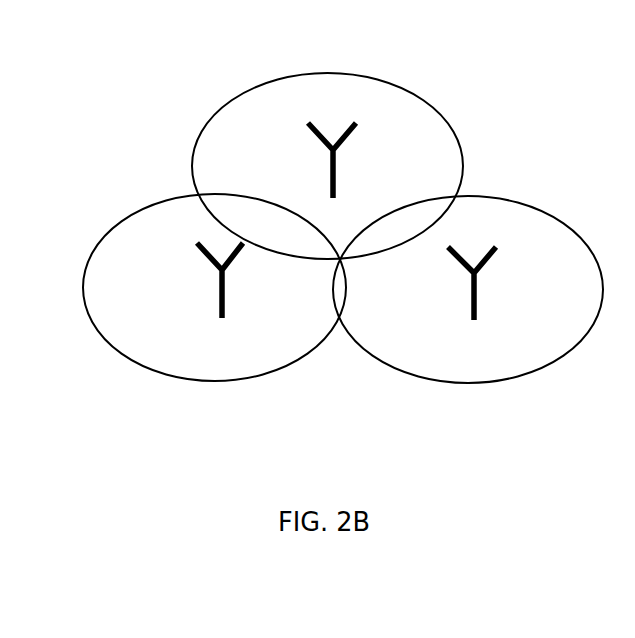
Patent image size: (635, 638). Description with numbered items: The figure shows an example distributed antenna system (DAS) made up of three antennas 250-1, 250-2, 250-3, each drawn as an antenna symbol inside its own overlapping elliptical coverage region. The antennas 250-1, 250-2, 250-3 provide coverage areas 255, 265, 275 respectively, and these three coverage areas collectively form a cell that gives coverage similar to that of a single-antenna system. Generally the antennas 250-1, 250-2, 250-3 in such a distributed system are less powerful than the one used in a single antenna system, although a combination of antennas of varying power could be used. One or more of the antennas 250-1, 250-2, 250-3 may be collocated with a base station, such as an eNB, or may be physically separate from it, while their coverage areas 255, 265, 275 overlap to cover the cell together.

The antenna 250-1 is at (217, 297).
The antenna 250-2 is at (467, 298).
The antenna 250-3 is at (330, 173).
The coverage area 255 is at (132, 208).
The coverage area 265 is at (573, 229).
The coverage area 275 is at (437, 108).